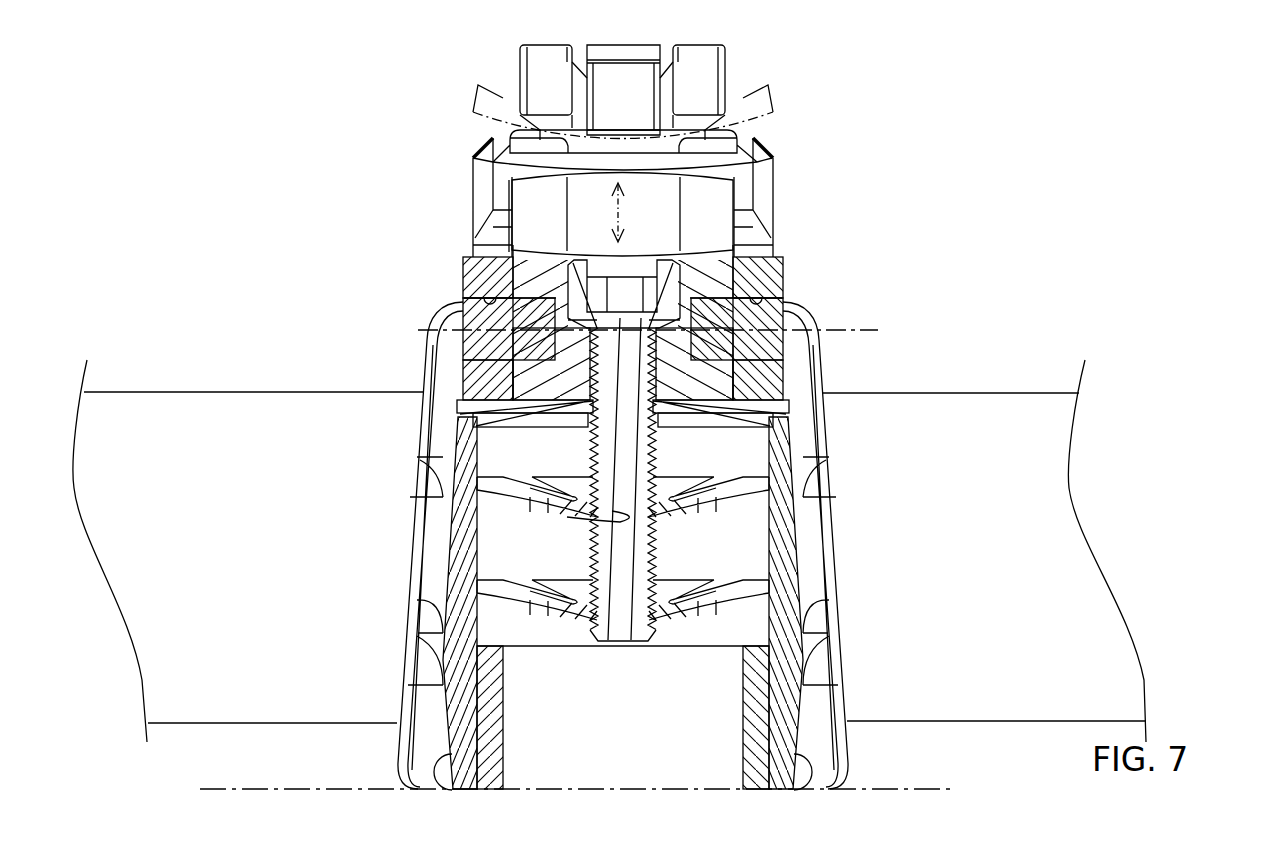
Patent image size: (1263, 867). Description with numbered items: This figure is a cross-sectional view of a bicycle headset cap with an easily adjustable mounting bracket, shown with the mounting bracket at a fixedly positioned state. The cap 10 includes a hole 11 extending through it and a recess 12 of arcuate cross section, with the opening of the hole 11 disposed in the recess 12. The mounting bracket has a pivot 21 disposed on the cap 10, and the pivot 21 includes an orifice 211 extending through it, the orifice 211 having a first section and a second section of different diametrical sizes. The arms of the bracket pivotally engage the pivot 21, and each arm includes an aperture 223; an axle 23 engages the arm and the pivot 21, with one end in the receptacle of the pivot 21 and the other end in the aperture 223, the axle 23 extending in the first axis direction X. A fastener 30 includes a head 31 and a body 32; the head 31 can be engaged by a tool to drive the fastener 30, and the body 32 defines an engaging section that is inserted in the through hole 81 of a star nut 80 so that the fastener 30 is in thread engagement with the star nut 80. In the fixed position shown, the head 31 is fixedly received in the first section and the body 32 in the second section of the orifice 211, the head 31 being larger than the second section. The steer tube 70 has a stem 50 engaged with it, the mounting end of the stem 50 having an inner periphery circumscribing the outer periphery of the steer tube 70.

The cap 10 is at (453, 412).
The hole 11 is at (462, 400).
The recess 12 is at (478, 398).
The pivot 21 is at (513, 262).
The orifice 211 is at (513, 279).
The aperture 223 is at (752, 302).
The axle 23 is at (757, 338).
The fastener 30 is at (688, 302).
The head 31 is at (657, 280).
The body 32 is at (695, 432).
The stem 50 is at (803, 738).
The steer tube 70 is at (760, 765).
The star nut 80 is at (493, 492).
The through hole 81 is at (600, 528).
The first axis direction X is at (418, 330).